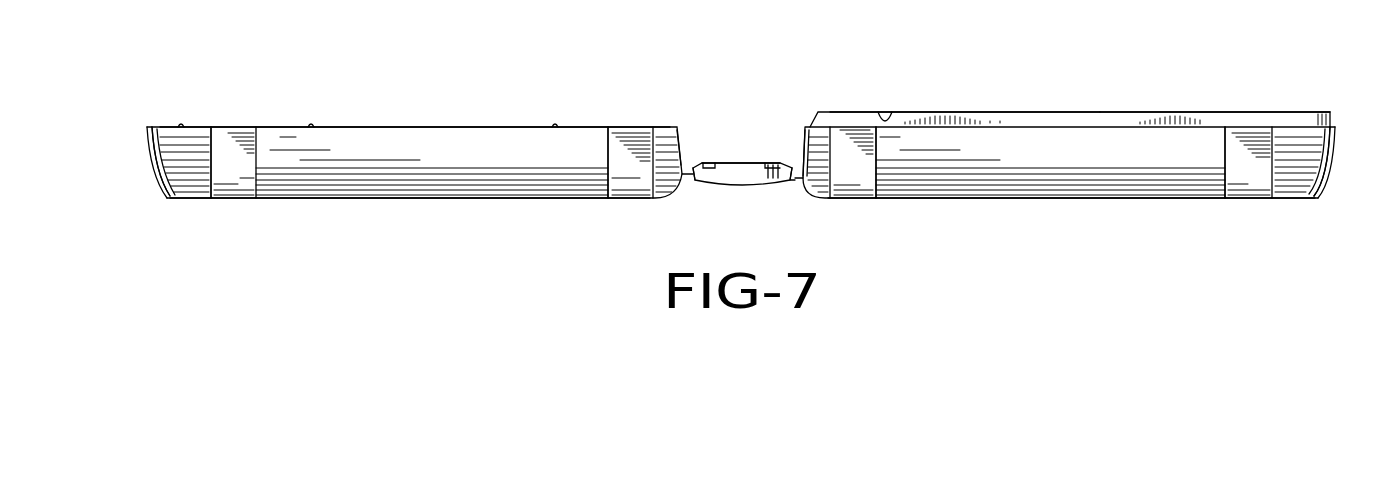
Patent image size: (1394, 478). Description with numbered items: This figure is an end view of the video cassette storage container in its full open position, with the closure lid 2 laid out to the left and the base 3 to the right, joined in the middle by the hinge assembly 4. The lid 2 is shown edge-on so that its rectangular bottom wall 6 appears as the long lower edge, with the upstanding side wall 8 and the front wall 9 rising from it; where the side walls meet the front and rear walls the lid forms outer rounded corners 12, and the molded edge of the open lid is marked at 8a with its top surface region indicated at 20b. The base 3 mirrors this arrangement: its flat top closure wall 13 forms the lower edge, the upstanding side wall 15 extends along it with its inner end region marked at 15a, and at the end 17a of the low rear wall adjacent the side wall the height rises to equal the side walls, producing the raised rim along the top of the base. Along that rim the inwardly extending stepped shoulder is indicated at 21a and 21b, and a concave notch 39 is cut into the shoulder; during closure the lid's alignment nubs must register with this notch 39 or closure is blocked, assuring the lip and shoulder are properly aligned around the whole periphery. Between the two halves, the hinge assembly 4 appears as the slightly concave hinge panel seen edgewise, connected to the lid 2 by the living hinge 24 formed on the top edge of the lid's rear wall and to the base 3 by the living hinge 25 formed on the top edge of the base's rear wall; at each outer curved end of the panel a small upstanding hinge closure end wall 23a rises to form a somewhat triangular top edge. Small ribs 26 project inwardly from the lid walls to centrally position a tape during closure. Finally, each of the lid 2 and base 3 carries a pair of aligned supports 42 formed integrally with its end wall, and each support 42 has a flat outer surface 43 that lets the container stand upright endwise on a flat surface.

The closure lid 2 is at (405, 157).
The base 3 is at (1065, 140).
The hinge assembly 4 is at (740, 164).
The bottom wall 6 is at (488, 200).
The side wall 8 is at (381, 155).
The inner end of first handle body 8a is at (682, 142).
The front wall 9 is at (158, 170).
The outer rounded corners 12 is at (157, 143).
The top closure wall 13 is at (1090, 200).
The side wall 15 is at (995, 157).
The inner end of second handle body 15a is at (803, 150).
The end of rear wall 17a is at (799, 124).
The top surface of first handle 20b is at (392, 127).
The top rim surface 21a is at (1048, 127).
The top rim surface 21b is at (1124, 112).
The hinge closure end wall 23a is at (729, 170).
The living hinge 24 is at (695, 182).
The living hinge 25 is at (792, 182).
The ribs 26 is at (181, 125).
The notches 39 is at (886, 120).
The supports 42 is at (236, 183).
The flat outer surface 43 is at (238, 165).